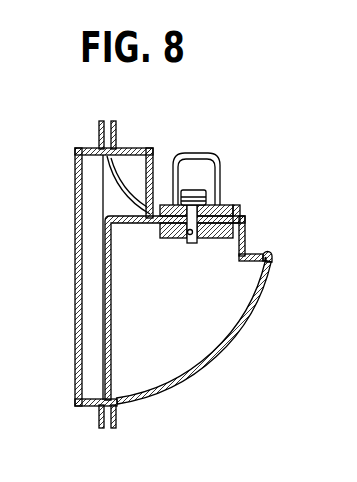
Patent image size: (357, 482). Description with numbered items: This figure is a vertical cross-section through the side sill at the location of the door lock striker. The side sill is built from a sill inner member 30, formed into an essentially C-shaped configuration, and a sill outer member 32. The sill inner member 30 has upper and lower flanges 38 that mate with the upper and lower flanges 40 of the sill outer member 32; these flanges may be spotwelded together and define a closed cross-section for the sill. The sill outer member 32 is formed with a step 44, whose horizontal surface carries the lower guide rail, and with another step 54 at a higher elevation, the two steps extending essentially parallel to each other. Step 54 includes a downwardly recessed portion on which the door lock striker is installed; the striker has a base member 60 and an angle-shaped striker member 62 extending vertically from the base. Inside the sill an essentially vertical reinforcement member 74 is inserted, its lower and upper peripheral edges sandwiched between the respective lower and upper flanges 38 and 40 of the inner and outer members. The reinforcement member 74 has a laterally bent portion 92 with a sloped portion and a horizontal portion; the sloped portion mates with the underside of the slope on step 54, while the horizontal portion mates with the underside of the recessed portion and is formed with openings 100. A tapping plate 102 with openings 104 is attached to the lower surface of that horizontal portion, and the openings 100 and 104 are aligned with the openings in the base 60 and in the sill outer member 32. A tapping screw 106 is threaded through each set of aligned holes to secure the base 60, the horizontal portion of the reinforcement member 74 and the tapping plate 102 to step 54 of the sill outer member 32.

The sill inner member 30 is at (76, 257).
The sill outer member 32 is at (208, 360).
The upper and lower flanges 38 is at (100, 132).
The upper and lower flanges 40 is at (117, 124).
The step 44 is at (265, 257).
The step 54 is at (158, 205).
The base member 60 is at (232, 206).
The angle-shaped striker member 62 is at (197, 153).
The vertical reinforcement member 74 is at (105, 318).
The laterally bent portion 92 is at (133, 223).
The openings 100 is at (245, 223).
The tapping plate 102 is at (211, 239).
The openings 104 is at (190, 244).
The tapping screw 106 is at (219, 199).